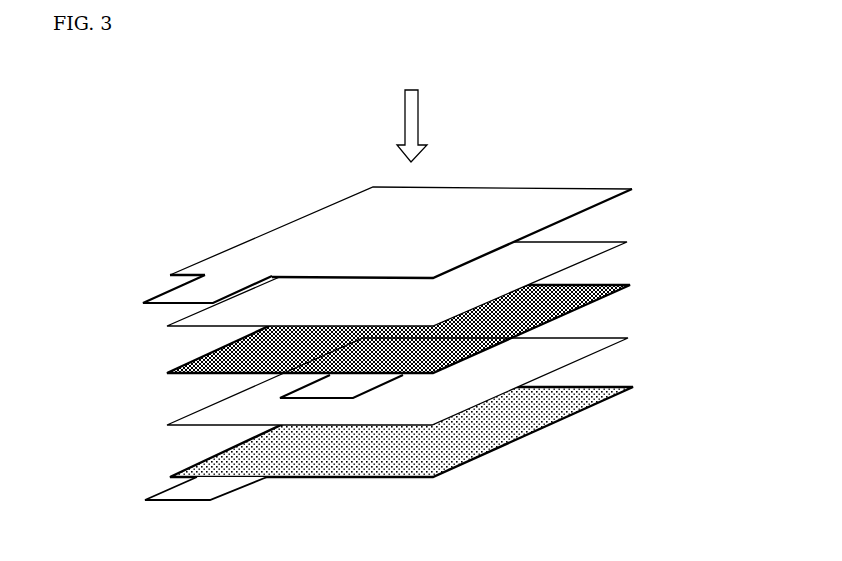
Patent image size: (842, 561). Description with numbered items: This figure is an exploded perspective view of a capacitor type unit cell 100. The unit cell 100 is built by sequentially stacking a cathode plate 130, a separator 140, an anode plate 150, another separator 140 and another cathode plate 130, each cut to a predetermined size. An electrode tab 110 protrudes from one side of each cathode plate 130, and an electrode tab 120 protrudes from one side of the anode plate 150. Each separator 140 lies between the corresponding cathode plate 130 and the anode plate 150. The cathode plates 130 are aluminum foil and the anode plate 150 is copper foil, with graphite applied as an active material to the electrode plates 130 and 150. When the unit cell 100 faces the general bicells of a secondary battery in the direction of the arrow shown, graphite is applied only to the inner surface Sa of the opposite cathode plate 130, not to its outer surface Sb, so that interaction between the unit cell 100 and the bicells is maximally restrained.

The capacitor type unit cell 100 is at (204, 162).
The electrode tab 110 is at (180, 298).
The electrode tab 120 is at (360, 398).
The cathode plate 130 is at (562, 198).
The separator 140 is at (620, 345).
The anode plate 150 is at (603, 283).
The inner surface Sa is at (372, 283).
The outer surface Sb is at (340, 227).